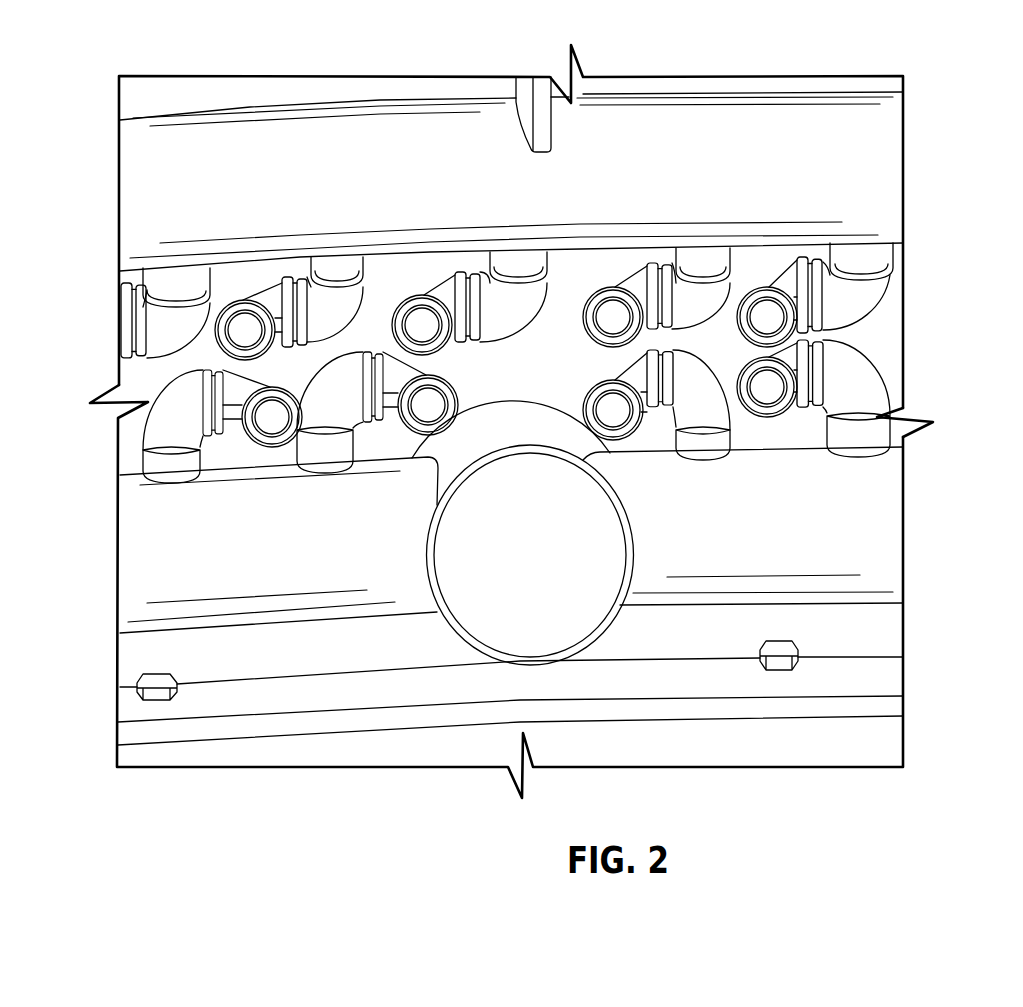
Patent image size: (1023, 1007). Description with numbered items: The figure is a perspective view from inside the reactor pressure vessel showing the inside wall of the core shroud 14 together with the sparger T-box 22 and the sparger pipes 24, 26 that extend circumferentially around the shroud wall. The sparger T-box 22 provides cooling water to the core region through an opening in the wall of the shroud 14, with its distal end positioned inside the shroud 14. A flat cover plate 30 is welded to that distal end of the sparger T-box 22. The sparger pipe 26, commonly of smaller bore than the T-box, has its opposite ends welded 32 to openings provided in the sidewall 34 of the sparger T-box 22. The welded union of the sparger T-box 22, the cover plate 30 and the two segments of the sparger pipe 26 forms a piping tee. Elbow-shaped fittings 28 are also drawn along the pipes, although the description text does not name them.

The core shroud 14 is at (853, 748).
The sparger T-box 22 is at (492, 610).
The sparger pipe 24 is at (867, 176).
The sparger pipe 26 is at (863, 517).
The elbow fittings 28 is at (857, 290).
The cover plate 30 is at (539, 566).
The weld 32 is at (433, 485).
The sidewall 34 is at (525, 425).